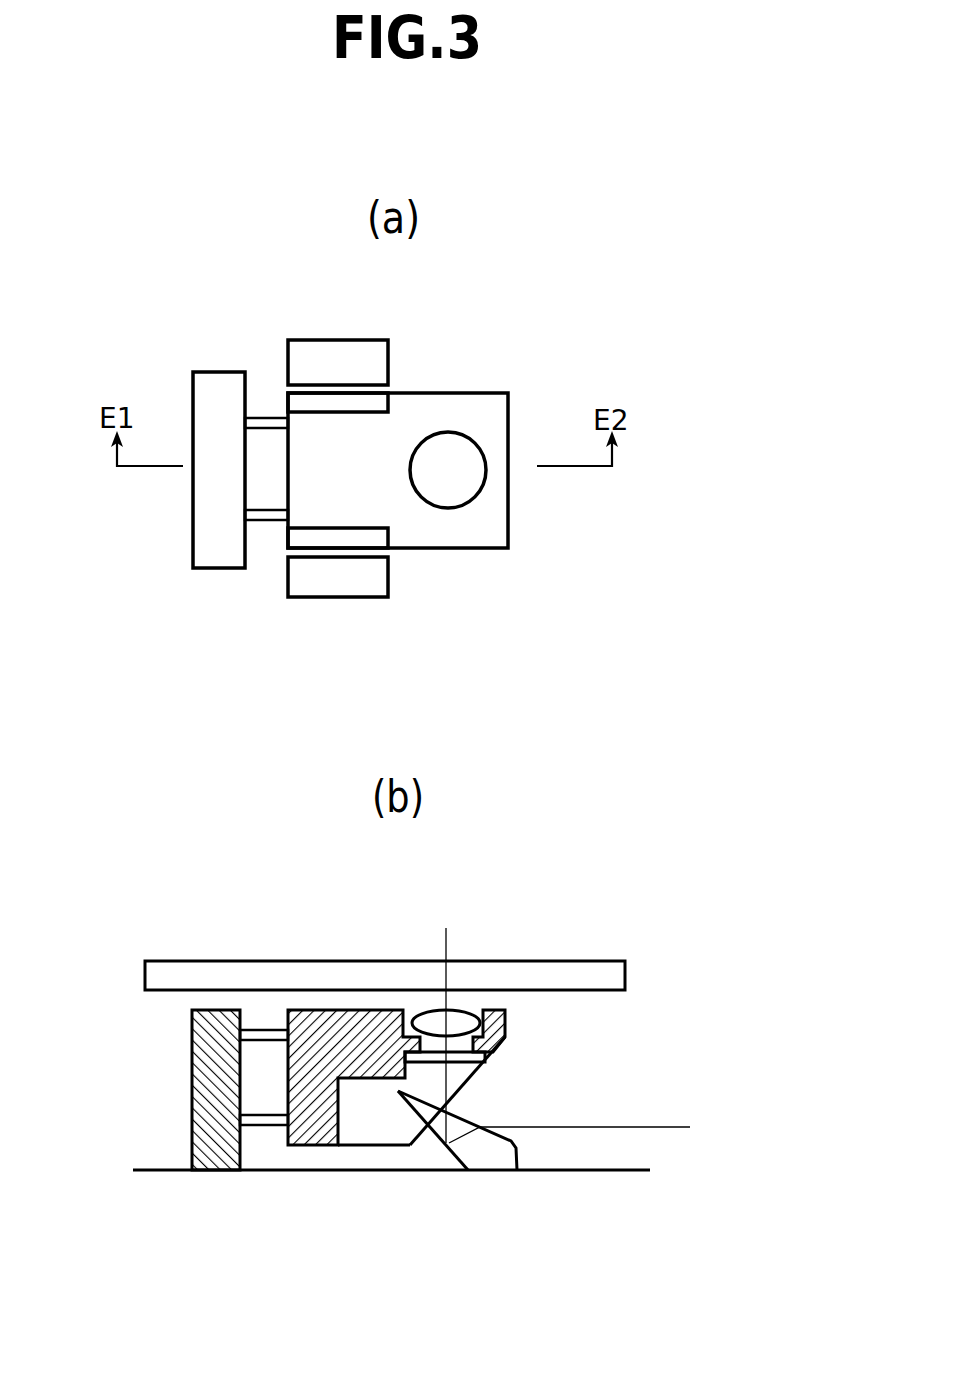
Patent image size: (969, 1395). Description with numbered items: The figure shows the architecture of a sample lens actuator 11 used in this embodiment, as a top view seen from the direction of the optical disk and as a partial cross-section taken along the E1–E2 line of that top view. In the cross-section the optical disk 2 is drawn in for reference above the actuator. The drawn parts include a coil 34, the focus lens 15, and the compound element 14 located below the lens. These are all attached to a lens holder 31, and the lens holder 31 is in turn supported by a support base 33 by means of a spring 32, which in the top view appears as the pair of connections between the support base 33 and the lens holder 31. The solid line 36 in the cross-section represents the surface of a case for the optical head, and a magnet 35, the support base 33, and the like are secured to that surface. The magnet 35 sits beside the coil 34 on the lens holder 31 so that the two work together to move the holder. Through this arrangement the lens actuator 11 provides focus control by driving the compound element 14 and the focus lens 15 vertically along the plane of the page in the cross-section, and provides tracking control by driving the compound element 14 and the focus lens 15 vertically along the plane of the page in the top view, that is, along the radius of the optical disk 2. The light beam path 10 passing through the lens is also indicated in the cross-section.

The optical disk 2 is at (533, 961).
The light beam 10 is at (452, 1150).
The lens actuator 11 is at (484, 393).
The compound element 14 is at (488, 1062).
The focus lens 15 is at (482, 485).
The lens holder 31 is at (508, 450).
The spring 32 is at (250, 520).
The support base 33 is at (227, 427).
The coil 34 is at (375, 403).
The magnet 35 is at (328, 340).
The solid line showing the surface of a case for the optical head 36 is at (172, 1175).